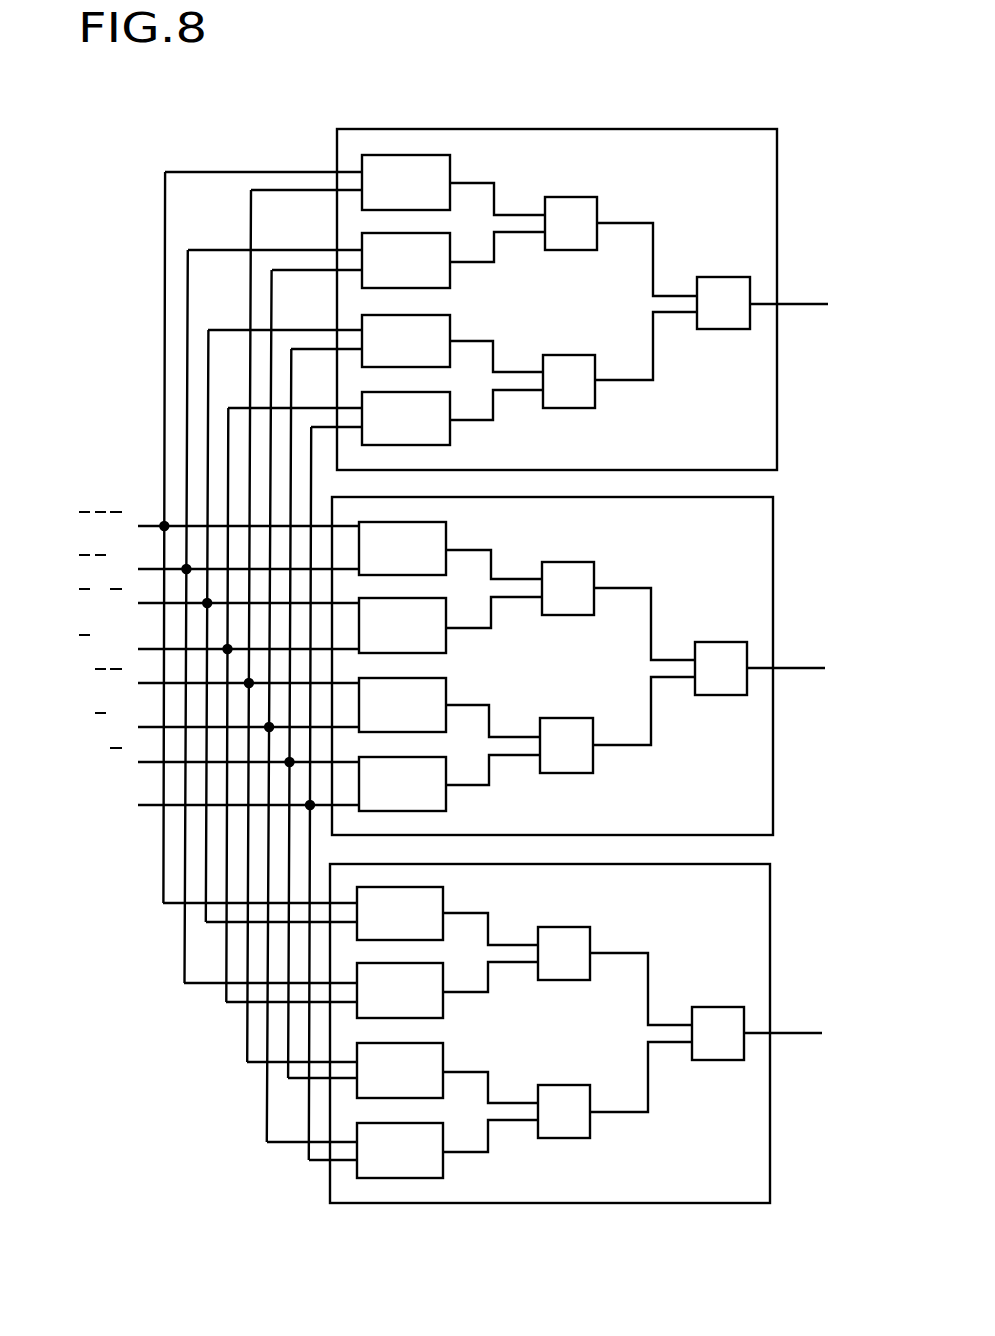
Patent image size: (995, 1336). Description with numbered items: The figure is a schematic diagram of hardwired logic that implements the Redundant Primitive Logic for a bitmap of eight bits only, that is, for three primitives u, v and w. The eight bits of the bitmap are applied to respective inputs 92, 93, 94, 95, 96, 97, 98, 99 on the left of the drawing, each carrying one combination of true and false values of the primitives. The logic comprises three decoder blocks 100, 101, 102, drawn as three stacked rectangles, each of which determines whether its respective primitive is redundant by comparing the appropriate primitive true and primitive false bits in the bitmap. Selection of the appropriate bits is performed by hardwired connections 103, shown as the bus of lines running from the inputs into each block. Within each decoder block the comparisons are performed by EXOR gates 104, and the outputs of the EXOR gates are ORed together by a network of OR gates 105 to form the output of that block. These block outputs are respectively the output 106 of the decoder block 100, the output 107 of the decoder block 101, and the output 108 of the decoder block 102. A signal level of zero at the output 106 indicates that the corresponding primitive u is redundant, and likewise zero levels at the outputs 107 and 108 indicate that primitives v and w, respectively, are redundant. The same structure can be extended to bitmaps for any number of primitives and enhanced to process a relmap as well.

The input 92 is at (194, 527).
The input 93 is at (194, 570).
The input 94 is at (194, 604).
The input 95 is at (194, 650).
The input 96 is at (194, 684).
The input 97 is at (194, 728).
The input 98 is at (194, 763).
The input 99 is at (194, 806).
The decoder block 100 is at (777, 180).
The decoder block 101 is at (772, 925).
The decoder block 102 is at (773, 538).
The hardwired connections 103 is at (165, 117).
The EXOR gates 104 is at (357, 117).
The network of OR gates 105 is at (765, 117).
The output 106 is at (808, 303).
The output 107 is at (803, 1033).
The output 108 is at (806, 668).